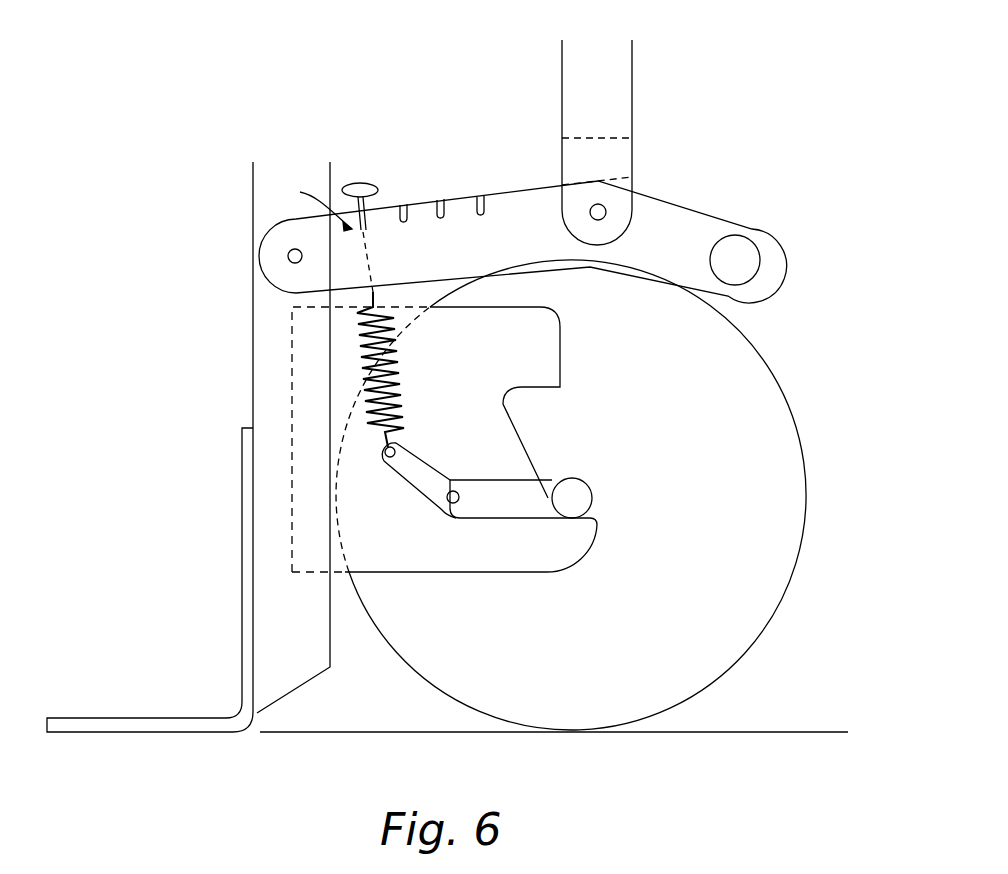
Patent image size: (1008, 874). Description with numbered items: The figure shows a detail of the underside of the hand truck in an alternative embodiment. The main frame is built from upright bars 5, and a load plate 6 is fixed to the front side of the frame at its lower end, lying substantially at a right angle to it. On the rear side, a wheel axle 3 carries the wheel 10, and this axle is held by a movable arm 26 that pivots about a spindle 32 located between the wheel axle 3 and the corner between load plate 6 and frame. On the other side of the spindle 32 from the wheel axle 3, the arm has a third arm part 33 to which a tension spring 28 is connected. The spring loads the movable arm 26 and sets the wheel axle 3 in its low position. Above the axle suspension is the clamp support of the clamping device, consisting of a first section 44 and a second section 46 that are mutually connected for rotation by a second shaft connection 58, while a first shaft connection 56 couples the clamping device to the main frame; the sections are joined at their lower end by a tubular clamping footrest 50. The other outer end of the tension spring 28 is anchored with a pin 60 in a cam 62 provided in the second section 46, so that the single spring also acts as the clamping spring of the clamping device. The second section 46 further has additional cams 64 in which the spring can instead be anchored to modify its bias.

The wheel axle 3 is at (578, 500).
The upright bar 5 is at (268, 394).
The load plate 6 is at (162, 716).
The wheel 10 is at (740, 633).
The movable arm 26 is at (508, 507).
The tension spring 28 is at (400, 393).
The spindle 32 is at (441, 508).
The third arm part 33 is at (403, 462).
The first section of clamp support 44 is at (613, 90).
The second section of clamp support 46 is at (530, 190).
The clamping footrest 50 is at (737, 257).
The first shaft connection 56 is at (288, 256).
The second shaft connection 58 is at (600, 204).
The pin 60 is at (359, 183).
The cam 62 is at (311, 203).
The additional cams 64 is at (403, 202).